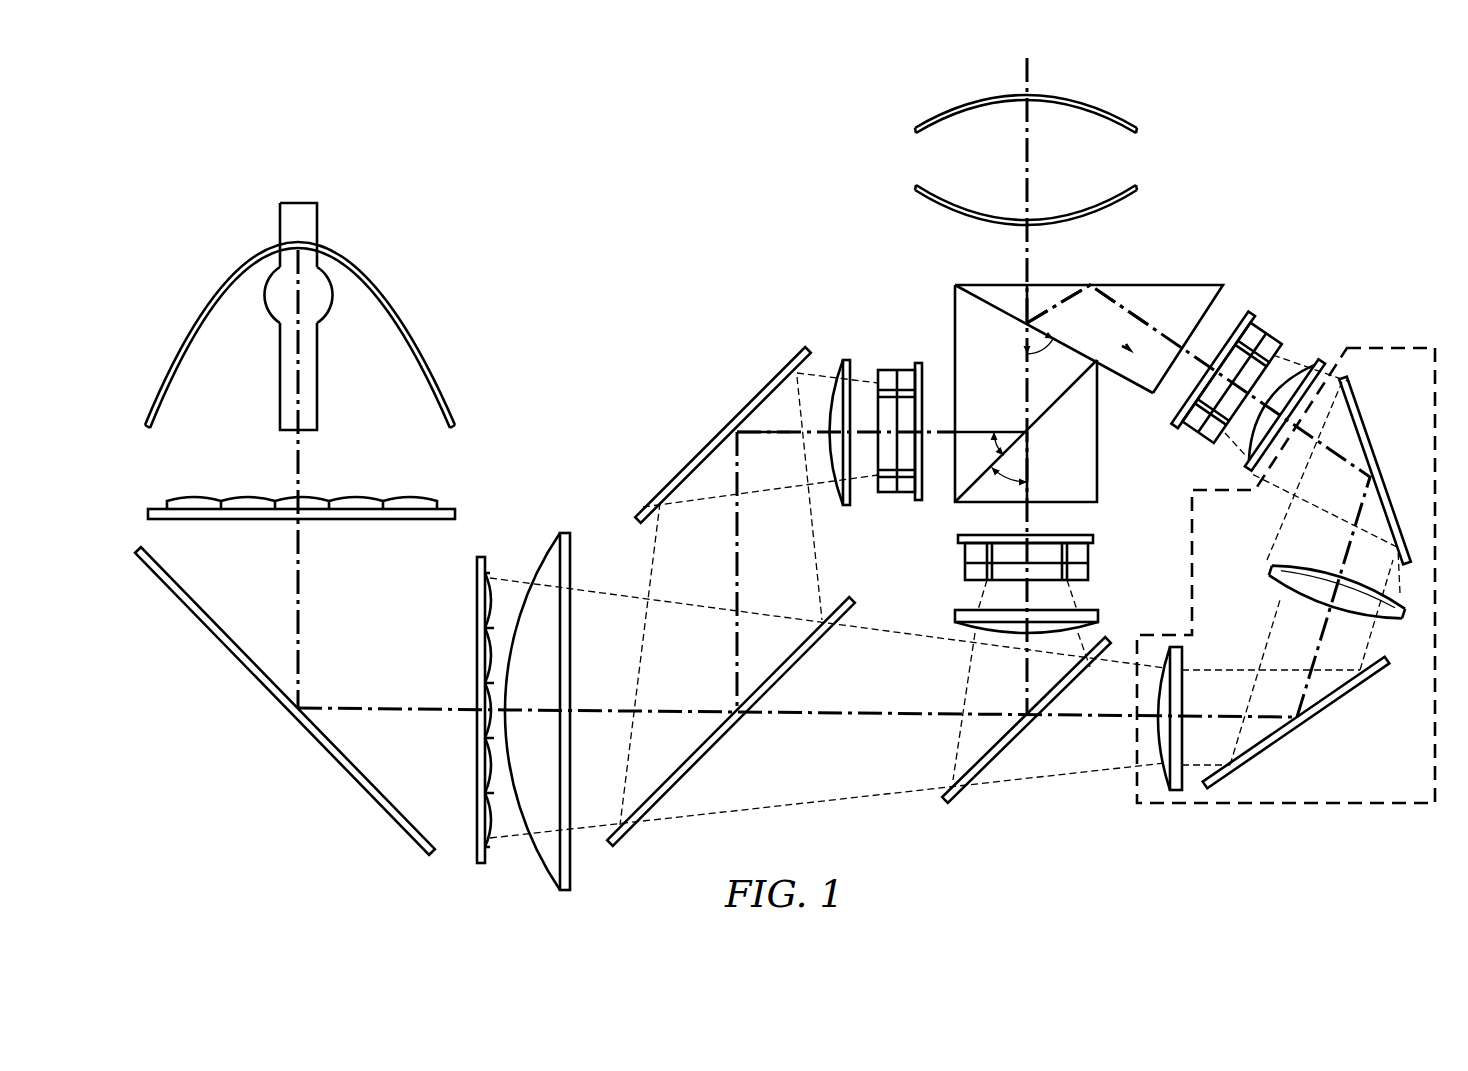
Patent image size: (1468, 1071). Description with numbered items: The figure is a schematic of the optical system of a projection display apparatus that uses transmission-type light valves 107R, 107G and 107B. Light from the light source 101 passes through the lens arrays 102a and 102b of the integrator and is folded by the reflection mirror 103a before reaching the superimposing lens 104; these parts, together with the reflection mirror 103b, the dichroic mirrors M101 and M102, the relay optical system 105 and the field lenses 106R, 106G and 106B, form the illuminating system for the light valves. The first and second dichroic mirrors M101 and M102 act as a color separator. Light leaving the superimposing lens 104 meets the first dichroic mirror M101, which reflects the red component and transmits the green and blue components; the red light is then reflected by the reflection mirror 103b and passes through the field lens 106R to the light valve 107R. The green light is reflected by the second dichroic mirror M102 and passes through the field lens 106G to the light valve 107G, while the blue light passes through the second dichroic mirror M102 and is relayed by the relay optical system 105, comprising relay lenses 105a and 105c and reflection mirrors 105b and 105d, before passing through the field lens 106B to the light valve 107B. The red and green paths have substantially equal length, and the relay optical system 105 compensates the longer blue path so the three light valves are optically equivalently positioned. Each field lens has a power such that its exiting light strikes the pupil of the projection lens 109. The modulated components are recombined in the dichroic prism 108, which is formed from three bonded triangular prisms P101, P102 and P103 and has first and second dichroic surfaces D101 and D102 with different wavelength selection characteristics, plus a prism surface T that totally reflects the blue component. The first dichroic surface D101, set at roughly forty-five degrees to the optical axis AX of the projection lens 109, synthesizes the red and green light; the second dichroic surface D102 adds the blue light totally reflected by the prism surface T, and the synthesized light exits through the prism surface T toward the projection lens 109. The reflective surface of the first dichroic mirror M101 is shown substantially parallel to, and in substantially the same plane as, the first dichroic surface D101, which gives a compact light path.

The light source 101 is at (245, 265).
The lens array 102a is at (245, 495).
The lens array 102b is at (473, 600).
The reflection mirror 103a is at (218, 642).
The reflection mirror 103b is at (702, 453).
The superimposing lens 104 is at (570, 868).
The first dichroic mirror M101 is at (720, 743).
The second dichroic mirror M102 is at (958, 802).
The field lens 106R is at (843, 357).
The transmission-type light valve 107R is at (902, 368).
The field lens 106G is at (957, 617).
The transmission-type light valve 107G is at (963, 563).
The field lens 106B is at (1313, 360).
The transmission-type light valve 107B is at (1270, 332).
The relay optical system 105 is at (1283, 808).
The relay lens 105a is at (1183, 653).
The reflection mirror 105b is at (1290, 737).
The relay lens 105c is at (1263, 562).
The reflection mirror 105d is at (1373, 440).
The dichroic prism 108 is at (1141, 265).
The projection lens 109 is at (1137, 158).
The optical axis AX is at (1030, 68).
The triangular prism P101 is at (1097, 487).
The triangular prism P102 is at (963, 308).
The triangular prism P103 is at (1005, 293).
The prism surface T is at (1060, 285).
The first dichroic surface D101 is at (1028, 431).
The second dichroic surface D102 is at (1062, 364).